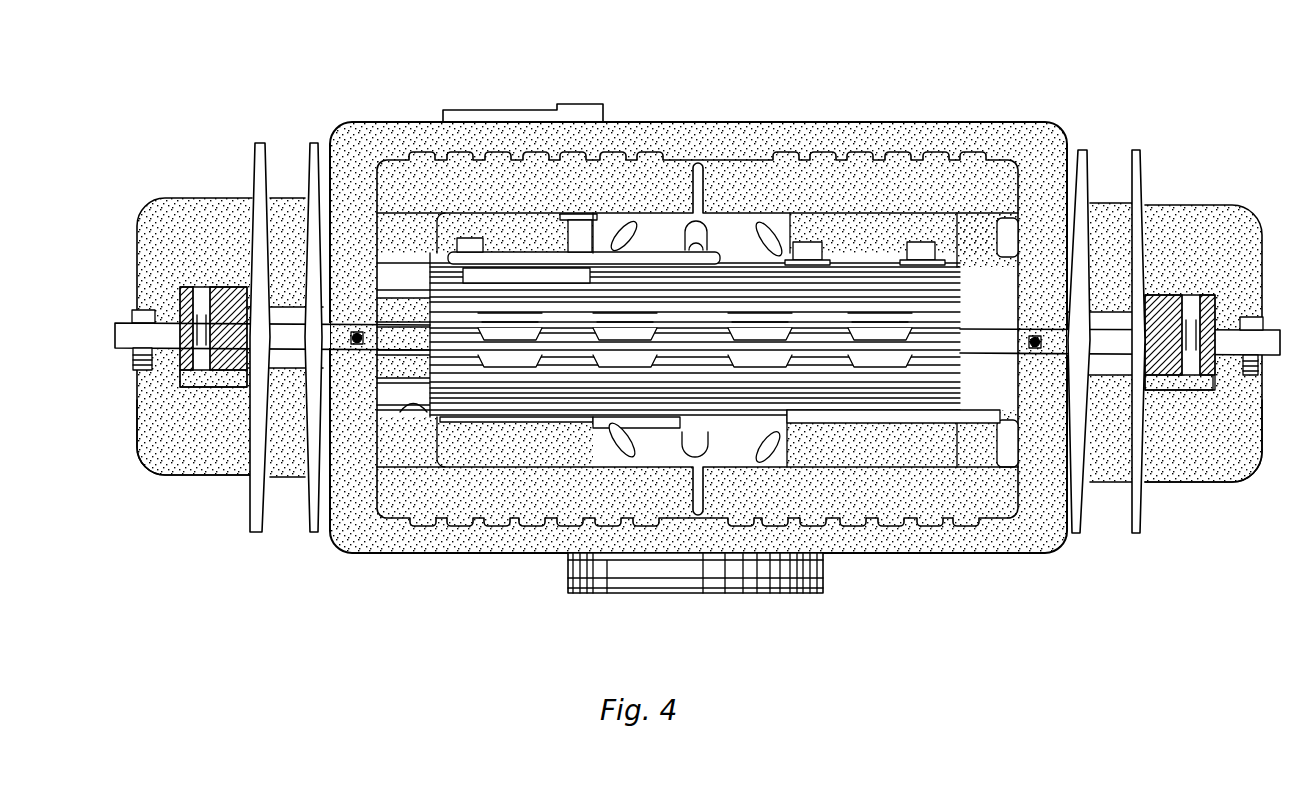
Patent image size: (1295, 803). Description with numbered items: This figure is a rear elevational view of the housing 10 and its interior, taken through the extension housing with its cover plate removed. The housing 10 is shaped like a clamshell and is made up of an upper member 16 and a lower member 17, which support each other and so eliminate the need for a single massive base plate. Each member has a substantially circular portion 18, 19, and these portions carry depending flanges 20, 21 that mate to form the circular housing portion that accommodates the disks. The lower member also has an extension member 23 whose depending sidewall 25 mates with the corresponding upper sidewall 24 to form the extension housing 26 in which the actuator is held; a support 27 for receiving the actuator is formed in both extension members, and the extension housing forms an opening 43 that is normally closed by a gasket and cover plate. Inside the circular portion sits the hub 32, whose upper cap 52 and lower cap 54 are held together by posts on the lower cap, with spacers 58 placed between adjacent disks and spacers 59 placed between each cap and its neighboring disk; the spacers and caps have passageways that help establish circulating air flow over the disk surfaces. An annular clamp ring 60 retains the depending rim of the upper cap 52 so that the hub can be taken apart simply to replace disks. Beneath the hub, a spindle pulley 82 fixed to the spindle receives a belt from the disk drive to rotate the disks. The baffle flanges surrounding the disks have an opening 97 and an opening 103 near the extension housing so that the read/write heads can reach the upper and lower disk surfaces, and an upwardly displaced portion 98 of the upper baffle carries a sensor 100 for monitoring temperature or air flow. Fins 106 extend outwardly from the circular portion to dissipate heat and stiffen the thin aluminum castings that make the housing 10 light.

The housing 10 is at (957, 84).
The upper member 16 is at (215, 198).
The lower member 17 is at (146, 472).
The circular portion 18 is at (1182, 205).
The circular portion 19 is at (1232, 480).
The depending flange 20 is at (137, 250).
The depending flange 21 is at (132, 400).
The extension member 23 is at (372, 122).
The depending sidewall 24 is at (355, 555).
The depending sidewall 25 is at (330, 158).
The extension housing 26 is at (322, 448).
The support 27 is at (640, 104).
The hub 32 is at (800, 232).
The opening 43 is at (505, 496).
The upper cap 52 is at (770, 226).
The lower cap 54 is at (600, 428).
The spacers 58 is at (960, 340).
The spacers 59 is at (958, 280).
The annular clamp ring 60 is at (880, 268).
The spindle pulley 82 is at (567, 578).
The opening 97 is at (395, 260).
The upwardly displaced portion 98 is at (497, 252).
The sensor 100 is at (540, 268).
The opening 103 is at (903, 410).
The fins 106 is at (250, 500).